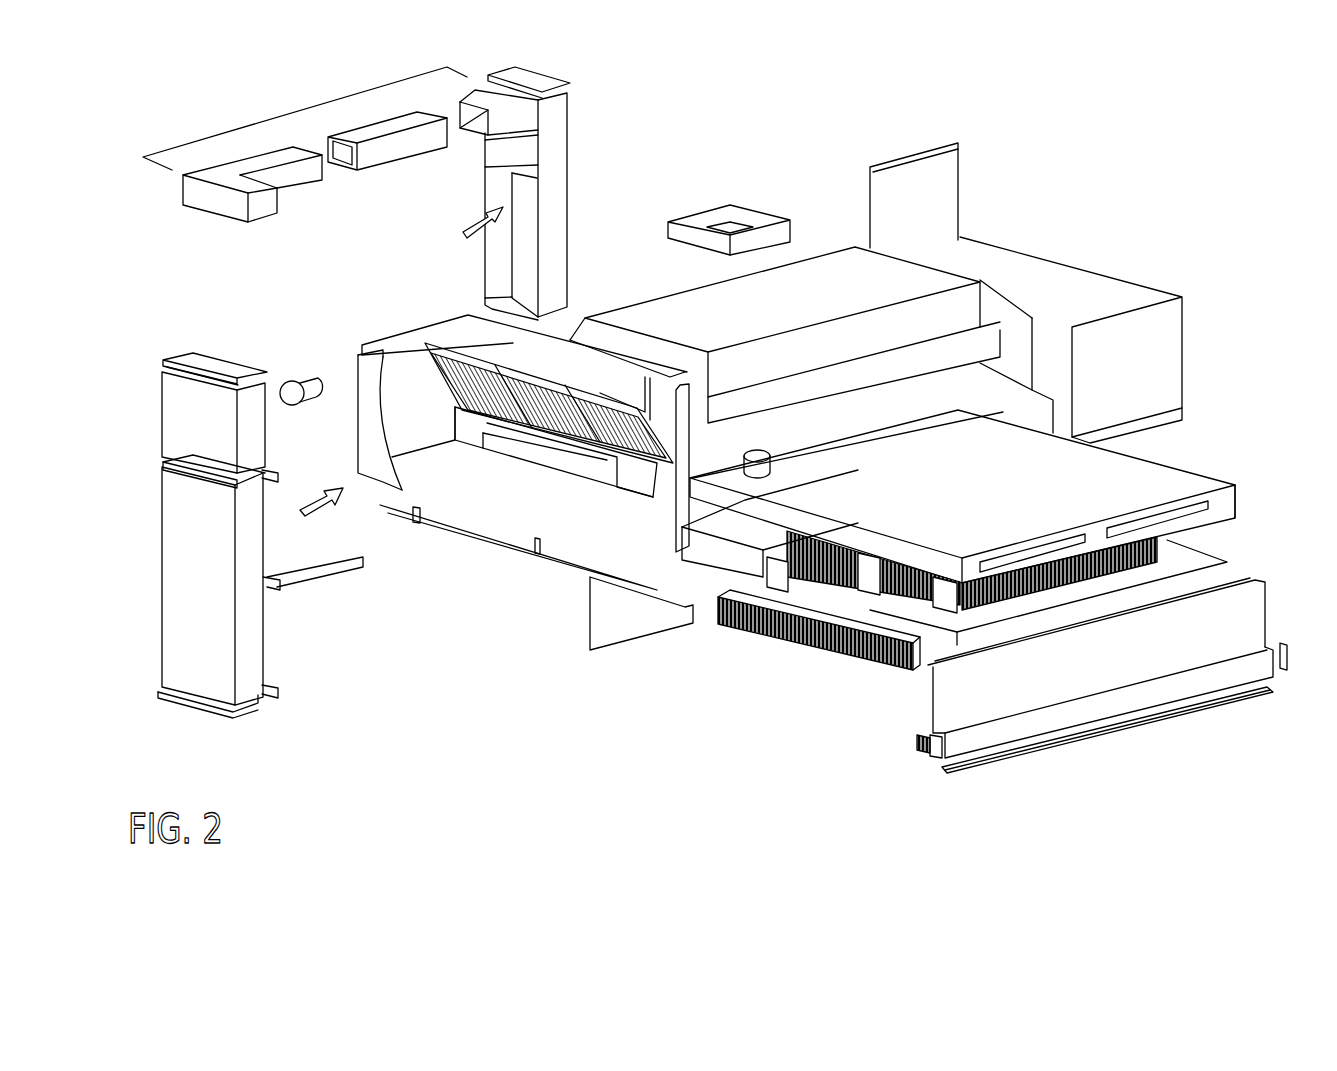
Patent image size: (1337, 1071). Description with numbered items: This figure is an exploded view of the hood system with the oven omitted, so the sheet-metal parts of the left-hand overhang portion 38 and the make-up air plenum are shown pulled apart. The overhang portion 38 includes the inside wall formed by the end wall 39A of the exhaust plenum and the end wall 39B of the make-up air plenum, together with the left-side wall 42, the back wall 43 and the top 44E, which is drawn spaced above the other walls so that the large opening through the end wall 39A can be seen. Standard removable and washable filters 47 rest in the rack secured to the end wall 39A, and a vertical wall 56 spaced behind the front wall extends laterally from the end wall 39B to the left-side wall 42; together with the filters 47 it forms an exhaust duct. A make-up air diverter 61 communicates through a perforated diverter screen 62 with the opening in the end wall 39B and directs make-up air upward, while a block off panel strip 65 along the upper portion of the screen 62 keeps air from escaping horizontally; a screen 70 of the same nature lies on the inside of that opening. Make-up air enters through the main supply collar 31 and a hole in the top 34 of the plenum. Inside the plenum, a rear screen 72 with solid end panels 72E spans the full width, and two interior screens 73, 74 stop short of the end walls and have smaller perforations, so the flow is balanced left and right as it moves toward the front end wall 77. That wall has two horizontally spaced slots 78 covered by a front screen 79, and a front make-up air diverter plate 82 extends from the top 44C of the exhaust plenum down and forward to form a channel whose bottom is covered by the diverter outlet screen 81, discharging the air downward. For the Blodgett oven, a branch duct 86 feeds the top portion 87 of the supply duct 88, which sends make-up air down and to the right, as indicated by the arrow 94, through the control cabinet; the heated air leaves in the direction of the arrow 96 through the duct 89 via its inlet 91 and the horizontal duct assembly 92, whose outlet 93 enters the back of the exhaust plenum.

The main supply collar 31 is at (953, 338).
The top of make-up air plenum 34 is at (992, 499).
The overhang portion 38 is at (343, 350).
The end wall of exhaust plenum 39A is at (646, 371).
The end wall of make-up air plenum 39B is at (597, 592).
The left-side wall 42 is at (475, 420).
The back wall 43 is at (437, 411).
The top of exhaust plenum 44C is at (764, 310).
The top 44E is at (468, 327).
The filters 47 is at (549, 423).
The vertical wall 56 is at (536, 613).
The make-up air diverter 61 is at (466, 532).
The diverter screen 62 is at (545, 543).
The block off panel strip 65 is at (483, 556).
The screen 70 is at (799, 650).
The rear screen 72 is at (706, 646).
The solid end panels 72E is at (721, 671).
The interior screen 73 is at (927, 668).
The interior screen 74 is at (1138, 706).
The front end wall of make-up air plenum 77 is at (1257, 473).
The slots 78 is at (1177, 513).
The front screen 79 is at (862, 791).
The make-up air diverter outlet screen 81 is at (1107, 777).
The front make-up air diverter plate 82 is at (1126, 680).
The branch duct 86 is at (247, 355).
The top portion of supply duct 87 is at (175, 413).
The supply duct 88 is at (224, 586).
The duct 89 is at (553, 182).
The inlet 91 is at (500, 250).
The horizontal duct assembly 92 is at (317, 105).
The outlet 93 is at (262, 202).
The arrow 94 is at (305, 512).
The arrow 96 is at (466, 232).